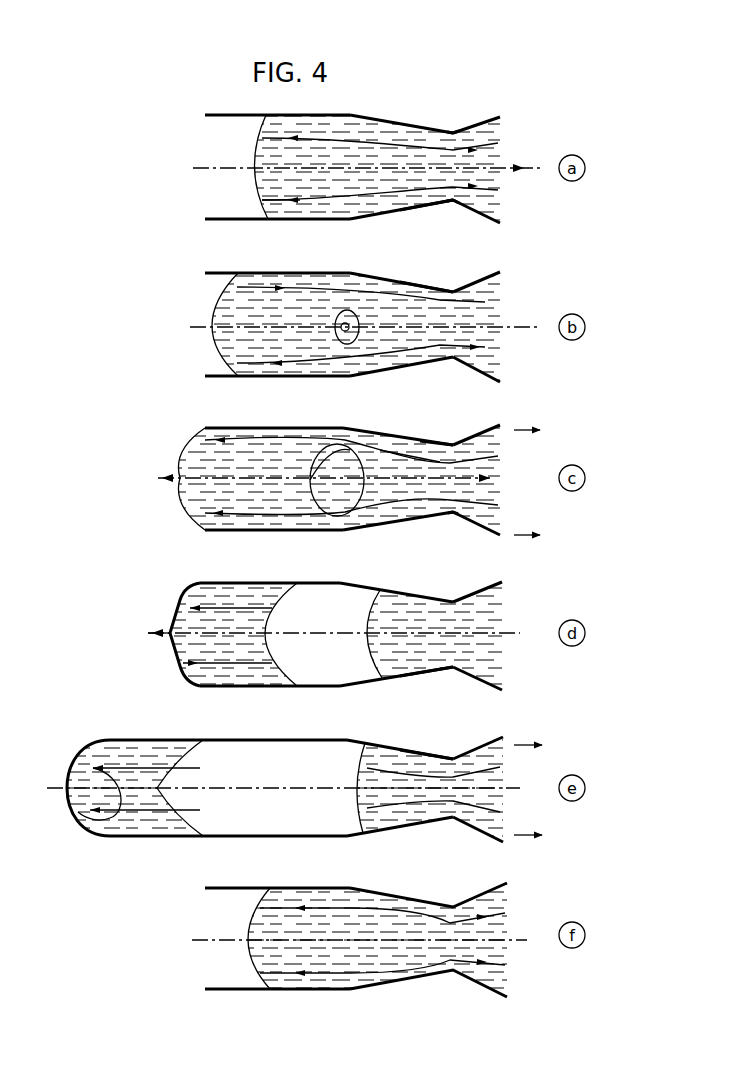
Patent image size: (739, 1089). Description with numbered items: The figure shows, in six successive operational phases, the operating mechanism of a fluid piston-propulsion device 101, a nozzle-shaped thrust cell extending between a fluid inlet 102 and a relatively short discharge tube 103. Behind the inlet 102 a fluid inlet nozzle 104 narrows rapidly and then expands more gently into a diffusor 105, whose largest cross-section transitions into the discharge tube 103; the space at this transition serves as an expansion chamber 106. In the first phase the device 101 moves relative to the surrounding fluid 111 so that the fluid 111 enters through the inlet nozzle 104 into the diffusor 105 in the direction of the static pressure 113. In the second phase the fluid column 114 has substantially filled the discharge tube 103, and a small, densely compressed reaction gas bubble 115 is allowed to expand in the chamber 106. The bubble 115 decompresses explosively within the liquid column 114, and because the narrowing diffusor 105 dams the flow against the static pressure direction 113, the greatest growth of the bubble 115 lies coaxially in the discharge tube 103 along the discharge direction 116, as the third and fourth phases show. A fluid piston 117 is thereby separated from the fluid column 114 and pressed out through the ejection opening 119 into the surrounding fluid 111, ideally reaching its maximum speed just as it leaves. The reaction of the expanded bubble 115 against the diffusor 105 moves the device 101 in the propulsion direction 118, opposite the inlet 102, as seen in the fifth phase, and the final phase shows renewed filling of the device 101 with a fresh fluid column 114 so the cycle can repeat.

In FIG. 4a, the fluid piston-propulsion device 101 is at (425, 220).
In FIG. 4b, the fluid piston-propulsion device 101 is at (422, 276).
In FIG. 4c, the fluid piston-propulsion device 101 is at (432, 436).
In FIG. 4d, the fluid piston-propulsion device 101 is at (418, 690).
In FIG. 4e, the fluid piston-propulsion device 101 is at (430, 738).
In FIG. 4f, the fluid piston-propulsion device 101 is at (392, 887).
In FIG. 4a, the fluid inlet 102 is at (476, 170).
In FIG. 4b, the fluid inlet 102 is at (476, 327).
In FIG. 4c, the fluid inlet 102 is at (458, 513).
In FIG. 4d, the fluid inlet 102 is at (497, 673).
In FIG. 4e, the fluid inlet 102 is at (497, 754).
In FIG. 4a, the discharge tube 103 is at (234, 141).
In FIG. 4b, the discharge tube 103 is at (277, 324).
In FIG. 4c, the discharge tube 103 is at (222, 427).
In FIG. 4d, the discharge tube 103 is at (249, 583).
In FIG. 4e, the discharge tube 103 is at (271, 740).
In FIG. 4f, the discharge tube 103 is at (247, 894).
In FIG. 4a, the fluid inlet nozzle 104 is at (452, 146).
In FIG. 4a, the diffusor 105 is at (377, 136).
In FIG. 4b, the diffusor 105 is at (401, 324).
In FIG. 4c, the diffusor 105 is at (391, 462).
In FIG. 4d, the diffusor 105 is at (397, 668).
In FIG. 4e, the diffusor 105 is at (400, 758).
In FIG. 4a, the expansion chamber 106 is at (377, 169).
In FIG. 4b, the expansion chamber 106 is at (356, 327).
In FIG. 4c, the expansion chamber 106 is at (339, 480).
In FIG. 4d, the expansion chamber 106 is at (336, 636).
In FIG. 4e, the expansion chamber 106 is at (285, 789).
In FIG. 4a, the fluid 111 is at (498, 190).
In FIG. 4b, the fluid 111 is at (500, 352).
In FIG. 4c, the fluid 111 is at (526, 468).
In FIG. 4d, the fluid 111 is at (131, 645).
In FIG. 4e, the fluid 111 is at (288, 782).
In FIG. 4f, the fluid 111 is at (373, 940).
In FIG. 4a, the static pressure direction 113 is at (520, 173).
In FIG. 4c, the static pressure direction 113 is at (454, 514).
In FIG. 4a, the fluid column 114 is at (278, 184).
In FIG. 4b, the fluid column 114 is at (297, 294).
In FIG. 4c, the fluid column 114 is at (414, 462).
In FIG. 4f, the fluid column 114 is at (377, 940).
In FIG. 4b, the compressed gas bubble 115 is at (347, 318).
In FIG. 4c, the compressed gas bubble 115 is at (342, 455).
In FIG. 4d, the compressed gas bubble 115 is at (323, 634).
In FIG. 4c, the discharge direction 116 is at (168, 484).
In FIG. 4d, the discharge direction 116 is at (165, 639).
In FIG. 4c, the fluid piston 117 is at (188, 465).
In FIG. 4d, the fluid piston 117 is at (185, 618).
In FIG. 4e, the fluid piston 117 is at (145, 752).
In FIG. 4c, the propulsion direction 118 is at (549, 483).
In FIG. 4e, the propulsion direction 118 is at (549, 790).
In FIG. 4e, the ejection opening 119 is at (200, 752).